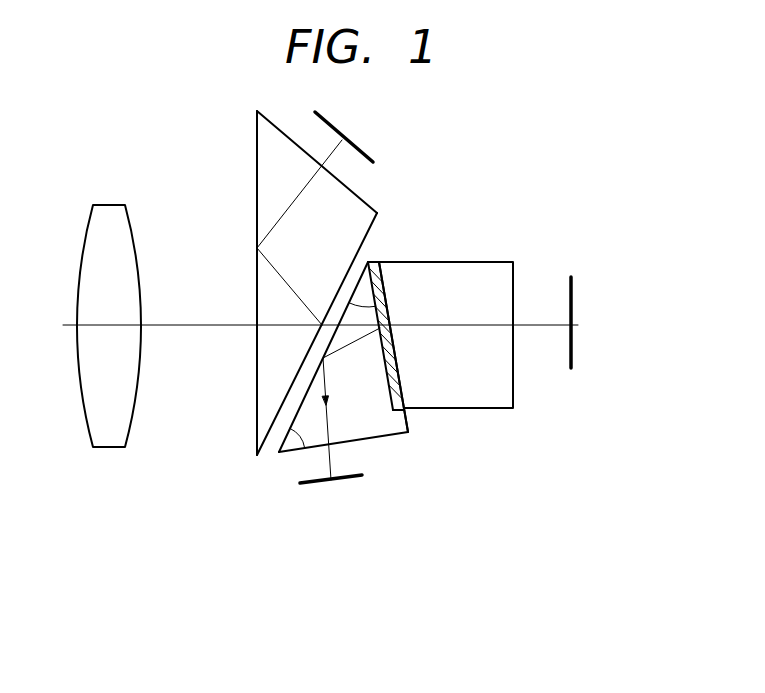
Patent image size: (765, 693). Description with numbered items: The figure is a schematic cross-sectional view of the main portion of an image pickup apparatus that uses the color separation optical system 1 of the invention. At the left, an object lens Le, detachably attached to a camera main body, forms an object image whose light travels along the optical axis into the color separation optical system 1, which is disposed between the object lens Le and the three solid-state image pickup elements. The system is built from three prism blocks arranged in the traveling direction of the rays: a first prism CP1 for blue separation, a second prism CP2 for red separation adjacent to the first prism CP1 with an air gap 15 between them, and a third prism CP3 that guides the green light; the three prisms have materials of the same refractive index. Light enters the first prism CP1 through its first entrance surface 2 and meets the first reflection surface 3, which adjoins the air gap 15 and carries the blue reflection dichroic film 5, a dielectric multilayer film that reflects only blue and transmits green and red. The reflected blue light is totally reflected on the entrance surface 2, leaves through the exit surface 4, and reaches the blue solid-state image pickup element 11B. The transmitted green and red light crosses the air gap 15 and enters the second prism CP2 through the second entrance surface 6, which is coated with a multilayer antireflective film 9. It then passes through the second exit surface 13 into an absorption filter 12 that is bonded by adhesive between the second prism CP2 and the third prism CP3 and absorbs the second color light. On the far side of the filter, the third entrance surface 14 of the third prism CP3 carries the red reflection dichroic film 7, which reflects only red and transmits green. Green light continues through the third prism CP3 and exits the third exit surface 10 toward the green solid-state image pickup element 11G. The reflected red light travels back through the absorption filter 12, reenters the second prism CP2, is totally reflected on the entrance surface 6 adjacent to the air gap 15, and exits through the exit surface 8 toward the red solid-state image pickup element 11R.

The color separation optical system 1 is at (343, 359).
The first entrance surface 2 is at (255, 443).
The first reflection surface 3 is at (283, 334).
The blue reflection dichroic film 5 is at (281, 407).
The exit surface 4 is at (360, 192).
The second entrance surface 6 is at (345, 478).
The multilayer antireflective film 9 is at (345, 478).
The red reflection dichroic film 7 is at (430, 347).
The third entrance surface 14 is at (394, 353).
The exit surface 8 is at (393, 436).
The third exit surface 10 is at (515, 275).
The absorption filter 12 is at (416, 421).
The second exit surface 13 is at (392, 383).
The air gap 15 is at (423, 320).
The first prism CP1 is at (302, 283).
The second prism CP2 is at (381, 367).
The third prism CP3 is at (470, 306).
The object lens Le is at (110, 202).
The blue solid-state image pickup element 11B is at (360, 146).
The red solid-state image pickup element 11R is at (351, 481).
The green solid-state image pickup element 11G is at (573, 291).